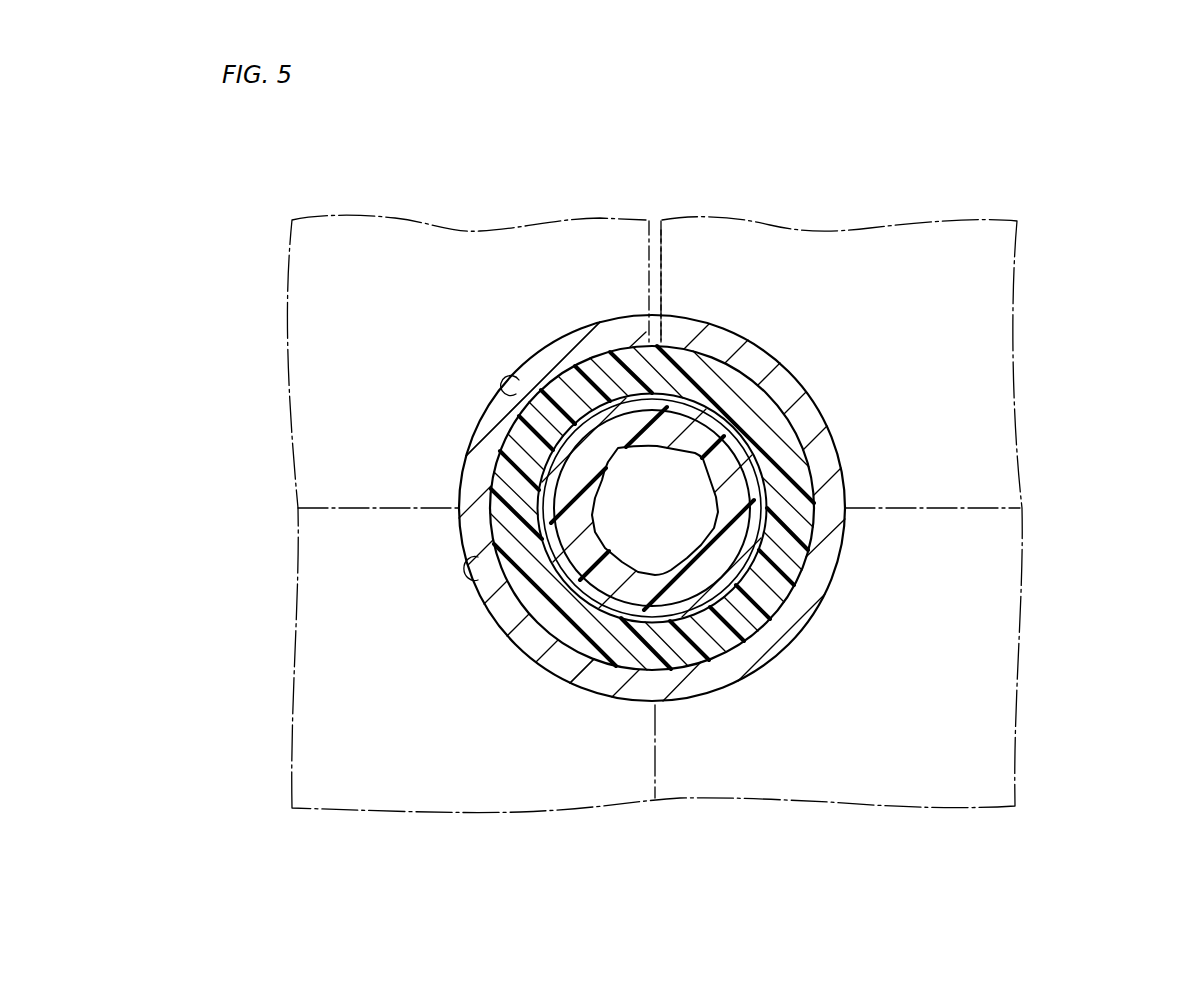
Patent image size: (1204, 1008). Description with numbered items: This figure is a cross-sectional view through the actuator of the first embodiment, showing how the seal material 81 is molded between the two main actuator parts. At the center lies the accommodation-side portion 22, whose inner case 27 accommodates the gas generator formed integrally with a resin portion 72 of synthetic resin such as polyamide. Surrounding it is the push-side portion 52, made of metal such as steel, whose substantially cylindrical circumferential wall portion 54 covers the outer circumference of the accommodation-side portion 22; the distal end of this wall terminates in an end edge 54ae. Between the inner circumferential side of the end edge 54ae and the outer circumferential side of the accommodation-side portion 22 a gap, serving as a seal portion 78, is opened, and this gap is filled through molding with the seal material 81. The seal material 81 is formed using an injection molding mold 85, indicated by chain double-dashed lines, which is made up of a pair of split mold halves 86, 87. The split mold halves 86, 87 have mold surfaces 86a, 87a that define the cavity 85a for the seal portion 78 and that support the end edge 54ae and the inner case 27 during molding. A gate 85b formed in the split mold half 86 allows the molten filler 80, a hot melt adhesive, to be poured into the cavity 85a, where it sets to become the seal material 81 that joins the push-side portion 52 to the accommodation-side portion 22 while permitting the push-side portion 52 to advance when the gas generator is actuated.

The molten filler 80 is at (652, 210).
The gate 85b is at (662, 283).
The circumferential wall portion 54 is at (788, 435).
The push-side portion 52 is at (788, 435).
The end edge 54ae is at (830, 402).
The split mold half 86 is at (977, 447).
The split mold half 87 is at (811, 579).
The injection molding mold 85 is at (838, 507).
The seal material 81 is at (798, 552).
The cavity 85a is at (490, 398).
The mold surface 86a is at (473, 425).
The mold surface 87a is at (470, 591).
The gap (seal portion) 78 is at (603, 667).
The resin portion 72 is at (703, 580).
The inner case 27 is at (743, 568).
The accommodation-side portion 22 is at (723, 634).